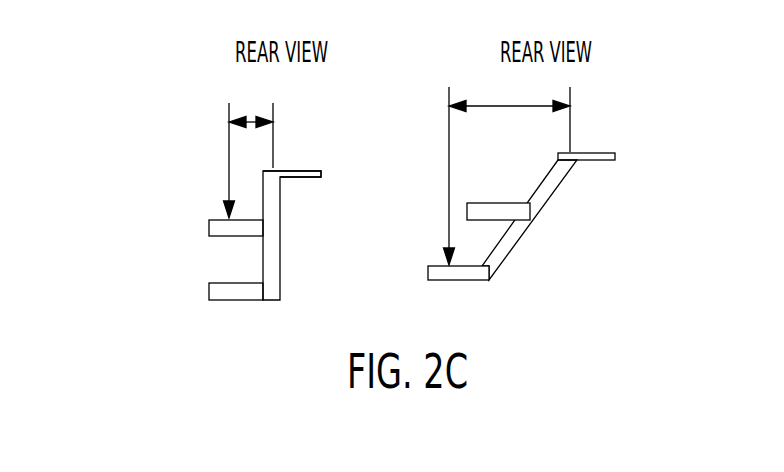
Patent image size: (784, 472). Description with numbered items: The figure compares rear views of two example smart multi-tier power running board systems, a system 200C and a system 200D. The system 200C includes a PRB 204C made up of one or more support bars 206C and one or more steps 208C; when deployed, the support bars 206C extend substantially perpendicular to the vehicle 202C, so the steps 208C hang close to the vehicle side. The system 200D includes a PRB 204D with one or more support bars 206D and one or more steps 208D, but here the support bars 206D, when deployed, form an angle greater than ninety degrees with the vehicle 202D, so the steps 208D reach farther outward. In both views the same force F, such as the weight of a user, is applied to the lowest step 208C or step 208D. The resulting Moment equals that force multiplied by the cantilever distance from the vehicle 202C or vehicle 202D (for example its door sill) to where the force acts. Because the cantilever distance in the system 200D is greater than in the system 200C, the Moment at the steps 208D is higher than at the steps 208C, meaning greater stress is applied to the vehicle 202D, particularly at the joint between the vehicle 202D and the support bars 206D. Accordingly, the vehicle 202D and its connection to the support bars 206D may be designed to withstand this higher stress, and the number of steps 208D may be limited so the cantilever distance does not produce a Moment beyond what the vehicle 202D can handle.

The system 200C is at (158, 185).
The vehicle 202C is at (297, 148).
The PRB 204C is at (318, 289).
The support bars 206C is at (280, 257).
The steps 208C is at (208, 232).
The system 200D is at (680, 148).
The vehicle 202D is at (612, 134).
The PRB 204D is at (584, 236).
The support bars 206D is at (557, 192).
The steps 208D is at (455, 265).